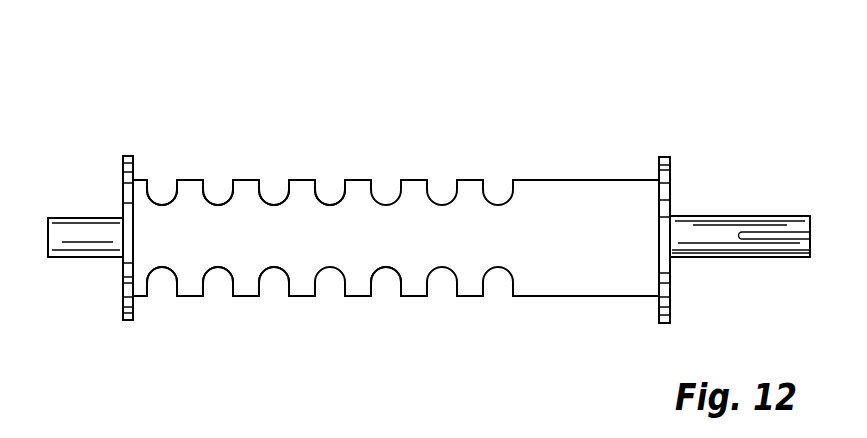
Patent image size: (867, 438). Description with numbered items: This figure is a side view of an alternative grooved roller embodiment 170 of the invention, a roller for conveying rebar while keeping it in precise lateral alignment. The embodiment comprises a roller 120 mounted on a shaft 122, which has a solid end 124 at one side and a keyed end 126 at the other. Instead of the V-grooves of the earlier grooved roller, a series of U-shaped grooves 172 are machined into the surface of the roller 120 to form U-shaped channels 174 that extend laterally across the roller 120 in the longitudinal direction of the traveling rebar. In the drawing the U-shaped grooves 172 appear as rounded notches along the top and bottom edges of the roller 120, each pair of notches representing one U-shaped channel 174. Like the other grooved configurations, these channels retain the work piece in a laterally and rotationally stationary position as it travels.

The alternative grooved roller embodiment 170 is at (424, 197).
The roller 120 is at (618, 207).
The shaft 122 is at (712, 230).
The solid end 124 is at (97, 228).
The keyed end 126 is at (795, 223).
The U-shaped grooves 172 is at (163, 188).
The U-shaped channels 174 is at (328, 206).